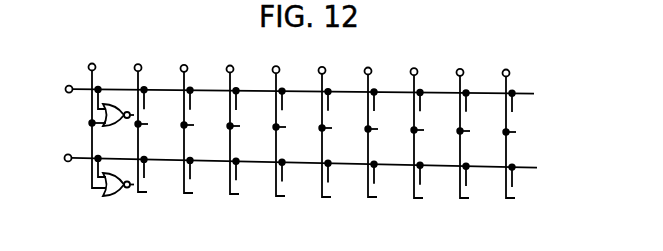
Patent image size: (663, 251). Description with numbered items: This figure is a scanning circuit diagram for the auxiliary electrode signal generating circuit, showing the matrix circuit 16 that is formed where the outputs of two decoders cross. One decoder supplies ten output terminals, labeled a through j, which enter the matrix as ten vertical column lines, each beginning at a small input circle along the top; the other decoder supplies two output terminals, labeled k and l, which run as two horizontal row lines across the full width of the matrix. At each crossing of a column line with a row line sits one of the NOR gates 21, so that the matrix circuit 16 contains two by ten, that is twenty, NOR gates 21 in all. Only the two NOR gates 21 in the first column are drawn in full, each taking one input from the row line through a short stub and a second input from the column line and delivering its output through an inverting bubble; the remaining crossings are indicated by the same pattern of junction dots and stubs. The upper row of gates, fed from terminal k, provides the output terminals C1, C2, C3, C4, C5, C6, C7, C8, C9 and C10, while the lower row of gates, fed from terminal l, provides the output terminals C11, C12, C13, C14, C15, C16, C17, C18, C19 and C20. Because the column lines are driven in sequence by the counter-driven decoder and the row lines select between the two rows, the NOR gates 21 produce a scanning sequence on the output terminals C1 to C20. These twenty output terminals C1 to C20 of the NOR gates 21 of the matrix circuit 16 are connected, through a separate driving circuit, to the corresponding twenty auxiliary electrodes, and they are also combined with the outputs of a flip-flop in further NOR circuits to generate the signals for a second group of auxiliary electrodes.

The matrix circuit 16 is at (317, 137).
The NOR gate 21 is at (104, 199).
The output terminal C1 is at (111, 124).
The output terminal C2 is at (157, 124).
The output terminal C3 is at (203, 124).
The output terminal C4 is at (249, 125).
The output terminal C5 is at (295, 126).
The output terminal C6 is at (341, 127).
The output terminal C7 is at (387, 127).
The output terminal C8 is at (433, 128).
The output terminal C9 is at (479, 128).
The output terminal C10 is at (529, 130).
The output terminal C11 is at (119, 193).
The output terminal C12 is at (162, 189).
The output terminal C13 is at (208, 196).
The output terminal C14 is at (254, 192).
The output terminal C15 is at (298, 198).
The output terminal C16 is at (347, 195).
The output terminal C17 is at (392, 200).
The output terminal C18 is at (438, 195).
The output terminal C19 is at (483, 201).
The output terminal C20 is at (531, 197).